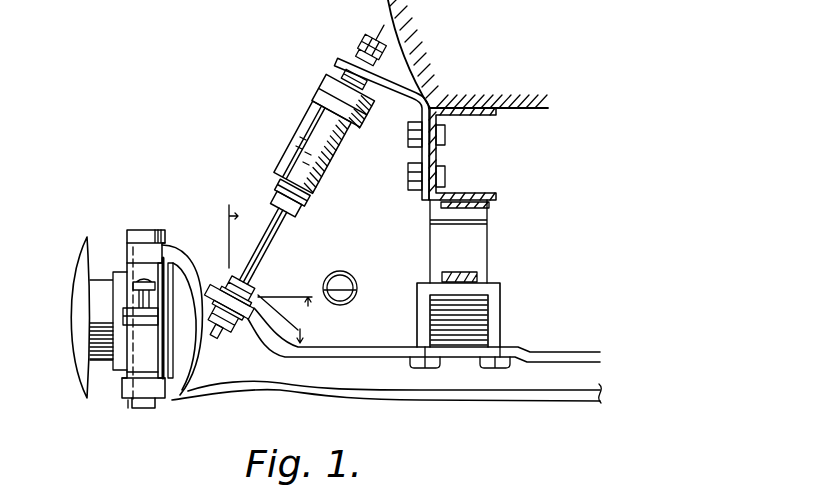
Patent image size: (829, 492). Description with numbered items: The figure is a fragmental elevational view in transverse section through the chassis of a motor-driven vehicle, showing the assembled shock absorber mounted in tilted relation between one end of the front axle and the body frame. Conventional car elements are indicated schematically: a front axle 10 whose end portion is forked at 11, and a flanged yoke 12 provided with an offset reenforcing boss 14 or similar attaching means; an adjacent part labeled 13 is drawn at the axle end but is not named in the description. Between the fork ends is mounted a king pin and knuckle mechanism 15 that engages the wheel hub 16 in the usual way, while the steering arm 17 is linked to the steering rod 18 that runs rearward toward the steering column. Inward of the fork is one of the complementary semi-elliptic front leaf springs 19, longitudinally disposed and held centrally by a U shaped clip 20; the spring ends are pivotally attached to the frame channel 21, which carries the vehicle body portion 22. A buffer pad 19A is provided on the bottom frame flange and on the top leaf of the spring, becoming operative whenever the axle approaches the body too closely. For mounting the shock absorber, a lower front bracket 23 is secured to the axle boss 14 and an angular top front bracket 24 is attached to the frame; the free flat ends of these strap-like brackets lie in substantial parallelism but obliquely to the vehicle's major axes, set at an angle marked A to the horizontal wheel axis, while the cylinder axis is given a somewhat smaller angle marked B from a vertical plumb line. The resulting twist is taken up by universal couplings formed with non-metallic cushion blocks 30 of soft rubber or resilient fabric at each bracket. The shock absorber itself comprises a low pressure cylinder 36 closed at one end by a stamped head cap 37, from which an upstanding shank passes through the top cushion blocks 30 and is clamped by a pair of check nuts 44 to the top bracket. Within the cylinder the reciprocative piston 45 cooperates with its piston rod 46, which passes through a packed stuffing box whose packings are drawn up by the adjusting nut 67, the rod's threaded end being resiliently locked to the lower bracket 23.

The front axle 10 is at (378, 380).
The forked end portion 11 is at (128, 400).
The flanged yoke 12 is at (191, 340).
The wheel hub 13 is at (130, 250).
The offset reenforcing boss 14 is at (262, 341).
The king pin and knuckle mechanism 15 is at (125, 372).
The wheel hub 16 is at (95, 298).
The steering arm 17 is at (137, 323).
The steering rod 18 is at (347, 280).
The front leaf spring 19 is at (475, 310).
The buffer pad 19A is at (467, 274).
The U shaped clip 20 is at (500, 333).
The frame channel 21 is at (468, 115).
The vehicle body portion 22 is at (516, 108).
The lower front bracket 23 is at (258, 293).
The angular top front bracket 24 is at (400, 100).
The cushion block 30 is at (345, 72).
The low pressure cylinder 36 is at (305, 125).
The head cap 37 is at (318, 90).
The check nuts 44 is at (360, 40).
The piston 45 is at (300, 140).
The piston rod 46 is at (272, 200).
The adjusting nut 67 is at (306, 203).